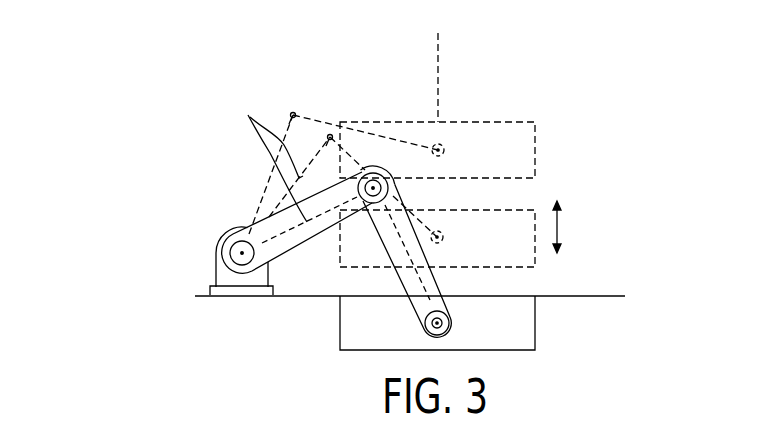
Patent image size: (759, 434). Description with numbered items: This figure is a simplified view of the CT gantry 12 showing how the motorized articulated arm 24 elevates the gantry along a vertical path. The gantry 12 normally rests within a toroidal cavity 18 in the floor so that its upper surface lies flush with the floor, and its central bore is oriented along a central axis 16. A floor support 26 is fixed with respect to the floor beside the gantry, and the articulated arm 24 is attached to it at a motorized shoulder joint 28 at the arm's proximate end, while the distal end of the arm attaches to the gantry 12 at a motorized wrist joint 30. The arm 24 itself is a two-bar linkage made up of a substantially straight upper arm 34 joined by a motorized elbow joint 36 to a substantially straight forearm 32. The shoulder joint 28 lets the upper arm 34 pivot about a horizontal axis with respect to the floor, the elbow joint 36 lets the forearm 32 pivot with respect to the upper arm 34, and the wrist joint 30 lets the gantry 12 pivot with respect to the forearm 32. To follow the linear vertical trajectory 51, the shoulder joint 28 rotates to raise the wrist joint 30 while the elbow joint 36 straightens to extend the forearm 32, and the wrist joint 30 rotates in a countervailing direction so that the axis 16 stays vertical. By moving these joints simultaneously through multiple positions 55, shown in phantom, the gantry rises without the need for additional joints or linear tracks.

The gantry 12 is at (535, 327).
The central axis 16 is at (440, 76).
The toroidal cavity 18 is at (517, 293).
The articulated arm 24 is at (220, 213).
The floor support 26 is at (222, 281).
The motorized shoulder joint 28 is at (240, 252).
The motorized wrist joint 30 is at (430, 323).
The forearm 32 is at (378, 228).
The upper arm 34 is at (267, 219).
The motorized elbow joint 36 is at (365, 170).
The linear vertical trajectory 51 is at (560, 227).
The multiple positions 55 is at (272, 155).